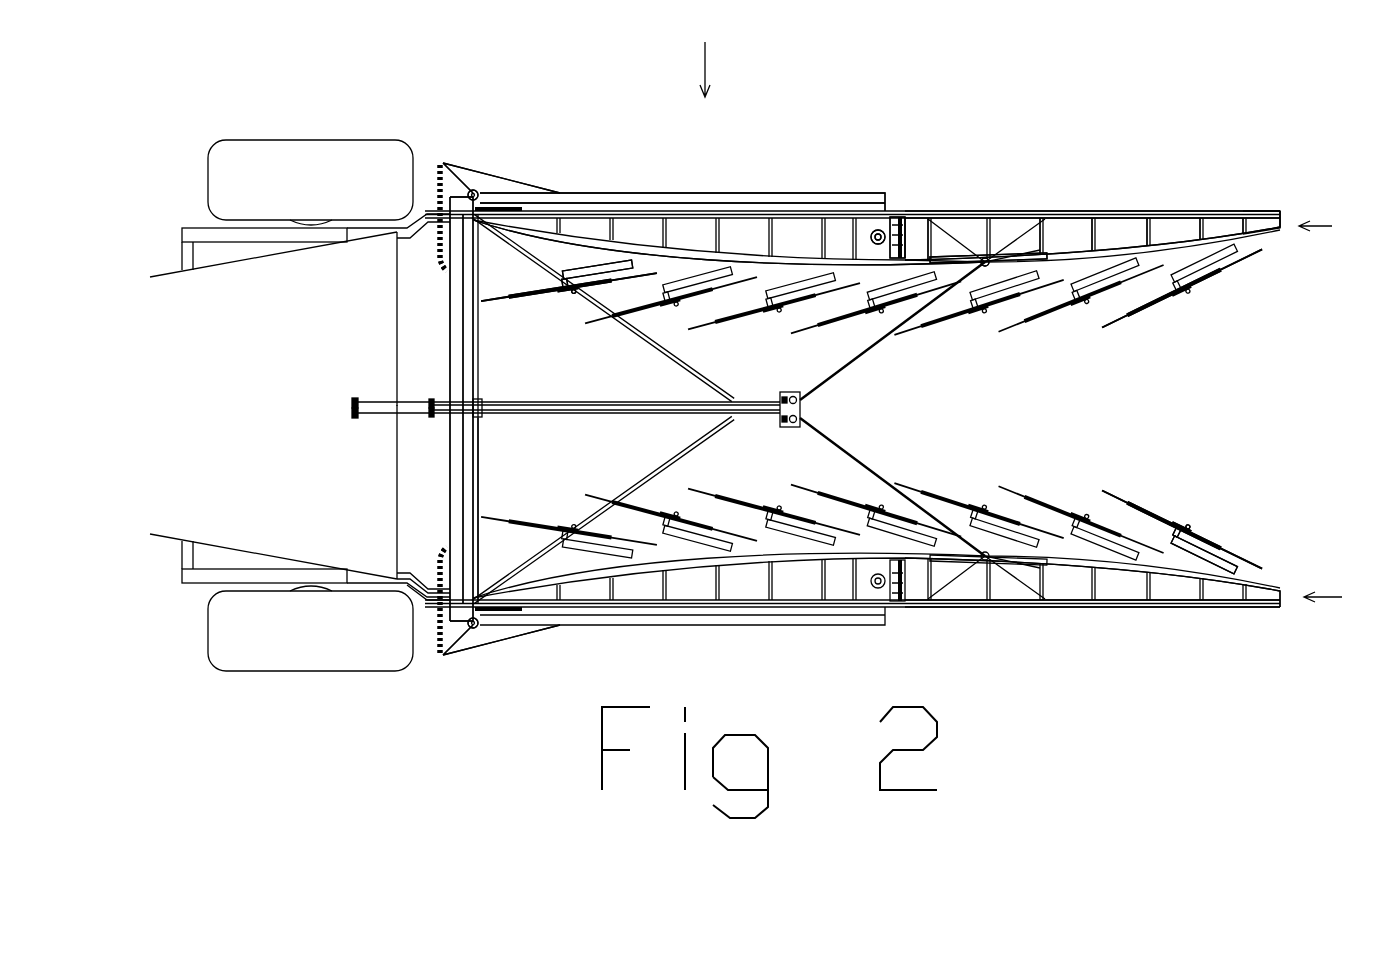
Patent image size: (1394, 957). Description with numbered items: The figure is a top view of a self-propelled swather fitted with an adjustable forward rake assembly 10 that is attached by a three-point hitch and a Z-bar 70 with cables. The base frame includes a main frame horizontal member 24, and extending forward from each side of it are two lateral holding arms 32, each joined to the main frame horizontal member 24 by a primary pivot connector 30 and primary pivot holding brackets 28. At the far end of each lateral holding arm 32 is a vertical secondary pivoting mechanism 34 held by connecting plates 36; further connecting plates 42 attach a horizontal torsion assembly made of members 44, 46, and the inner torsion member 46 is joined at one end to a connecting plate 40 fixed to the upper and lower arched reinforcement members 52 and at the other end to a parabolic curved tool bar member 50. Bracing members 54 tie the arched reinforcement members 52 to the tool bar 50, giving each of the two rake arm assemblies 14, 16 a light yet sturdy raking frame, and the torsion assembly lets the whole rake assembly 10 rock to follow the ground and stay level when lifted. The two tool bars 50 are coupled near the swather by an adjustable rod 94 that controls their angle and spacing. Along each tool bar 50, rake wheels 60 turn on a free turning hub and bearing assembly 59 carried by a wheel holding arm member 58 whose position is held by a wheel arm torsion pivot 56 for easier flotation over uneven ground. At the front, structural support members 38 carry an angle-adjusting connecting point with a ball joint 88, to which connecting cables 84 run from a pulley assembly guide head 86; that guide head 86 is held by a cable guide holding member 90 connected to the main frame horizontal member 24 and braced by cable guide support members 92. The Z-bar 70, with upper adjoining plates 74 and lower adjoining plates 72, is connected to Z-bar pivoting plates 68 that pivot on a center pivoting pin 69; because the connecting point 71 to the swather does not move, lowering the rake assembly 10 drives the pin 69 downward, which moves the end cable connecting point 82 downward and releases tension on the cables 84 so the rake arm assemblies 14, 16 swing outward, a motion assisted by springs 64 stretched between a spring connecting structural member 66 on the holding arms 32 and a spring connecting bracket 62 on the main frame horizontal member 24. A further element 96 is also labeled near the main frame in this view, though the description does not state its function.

The rake assembly 10 is at (702, 58).
The rake arm assembly 14 is at (1339, 598).
The rake arm assembly 16 is at (1330, 227).
The main frame horizontal member 24 is at (458, 317).
The primary pivot holding bracket 28 is at (441, 165).
The primary pivot connector 30 is at (478, 190).
The lateral holding arm 32 is at (592, 193).
The secondary pivoting mechanism 34 is at (868, 205).
The connecting plate 36 is at (872, 232).
The structural support member 38 is at (1035, 213).
The connecting plate 40 is at (898, 215).
The connecting plate 42 is at (889, 215).
The torsion assembly member 44 is at (908, 235).
The inner torsion member 46 is at (917, 255).
The parabolic curved tool bar member 50 is at (1236, 268).
The arched reinforcement member 52 is at (1225, 213).
The bracing member 54 is at (1103, 213).
The wheel arm torsion pivot 56 is at (1280, 576).
The wheel holding arm member 58 is at (1212, 552).
The hub and bearing assembly 59 is at (1184, 522).
The rake wheel 60 is at (1132, 508).
The spring connecting bracket 62 is at (440, 536).
The spring 64 is at (448, 640).
The spring connecting structural member 66 is at (470, 628).
The Z-bar pivoting plate 68 is at (430, 400).
The center pivoting pin 69 is at (431, 420).
The Z-bar 70 is at (603, 402).
The non-moving connecting point 71 is at (358, 420).
The lower adjoining plate 72 is at (365, 400).
The upper adjoining plate 74 is at (660, 418).
The end cable connecting point 82 is at (725, 398).
The connecting cable 84 is at (882, 372).
The pulley assembly guide head 86 is at (792, 392).
The ball joint 88 is at (983, 258).
The cable guide holding member 90 is at (872, 446).
The cable guide support member 92 is at (572, 295).
The adjustable rod 94 is at (478, 490).
The beam bracket 96 is at (480, 425).